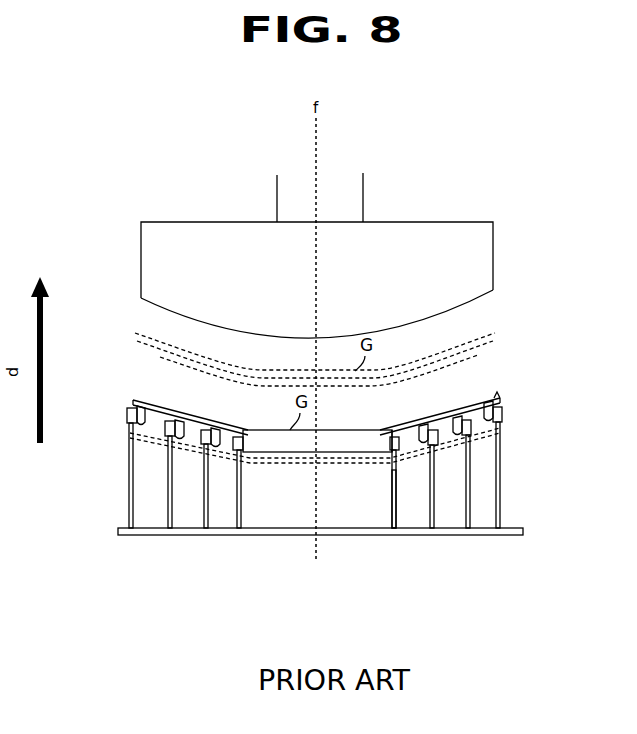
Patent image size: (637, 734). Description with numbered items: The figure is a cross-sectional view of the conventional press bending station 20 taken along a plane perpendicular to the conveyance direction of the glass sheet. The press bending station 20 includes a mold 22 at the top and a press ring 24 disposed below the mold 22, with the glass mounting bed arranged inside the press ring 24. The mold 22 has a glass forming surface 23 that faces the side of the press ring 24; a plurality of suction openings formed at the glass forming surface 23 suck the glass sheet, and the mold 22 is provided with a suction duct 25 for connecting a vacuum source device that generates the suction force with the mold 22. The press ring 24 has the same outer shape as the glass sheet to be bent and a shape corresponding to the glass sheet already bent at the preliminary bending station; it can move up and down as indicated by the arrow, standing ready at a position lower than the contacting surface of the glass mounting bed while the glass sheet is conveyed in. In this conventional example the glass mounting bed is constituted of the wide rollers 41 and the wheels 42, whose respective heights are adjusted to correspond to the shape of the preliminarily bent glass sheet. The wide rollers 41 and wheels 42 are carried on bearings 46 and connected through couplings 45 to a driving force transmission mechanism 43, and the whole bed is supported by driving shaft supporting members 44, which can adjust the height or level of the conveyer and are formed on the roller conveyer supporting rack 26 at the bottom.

The press bending station 20 is at (436, 163).
The mold 22 is at (458, 222).
The glass forming surface 23 is at (480, 299).
The press ring 24 is at (496, 336).
The suction duct 25 is at (364, 197).
The roller conveyer supporting rack 26 is at (340, 534).
The wide roller 41 is at (340, 451).
The wheel 42 is at (150, 405).
The driving force transmission mechanism 43 is at (537, 522).
The driving shaft supporting member 44 is at (398, 515).
The coupling 45 is at (127, 411).
The bearing 46 is at (403, 426).